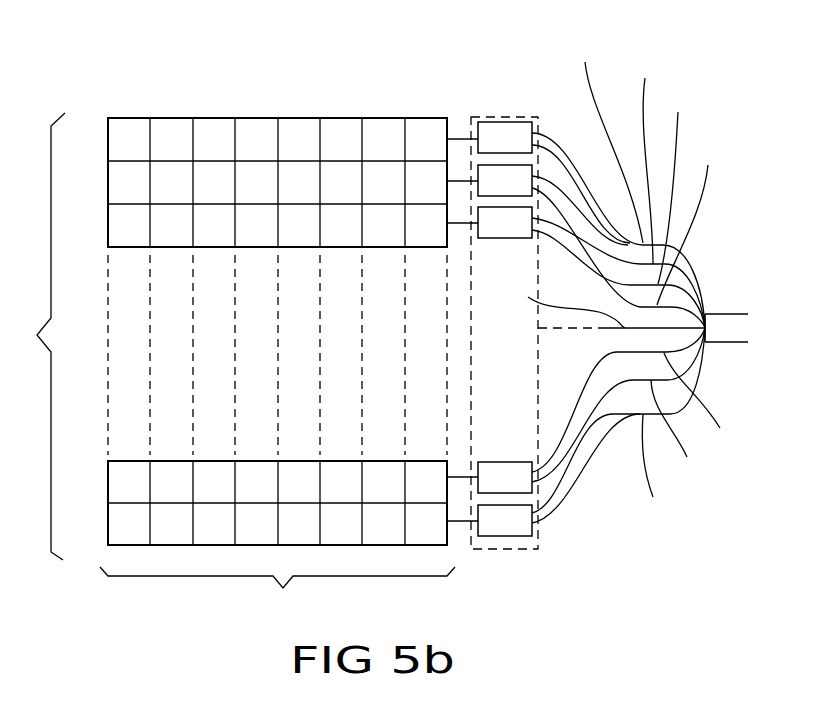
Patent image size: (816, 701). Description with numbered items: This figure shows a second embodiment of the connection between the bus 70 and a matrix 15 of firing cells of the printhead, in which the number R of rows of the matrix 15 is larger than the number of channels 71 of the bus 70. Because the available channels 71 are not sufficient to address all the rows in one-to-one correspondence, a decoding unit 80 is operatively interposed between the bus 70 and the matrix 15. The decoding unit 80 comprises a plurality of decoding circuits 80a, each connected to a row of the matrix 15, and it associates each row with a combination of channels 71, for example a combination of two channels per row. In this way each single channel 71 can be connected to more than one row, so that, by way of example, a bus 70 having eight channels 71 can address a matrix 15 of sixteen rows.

The matrix 15 is at (250, 108).
The decoding unit 80 is at (497, 107).
The decoding circuit 80a is at (489, 329).
The bus 70 is at (726, 312).
The channel 71 is at (613, 455).